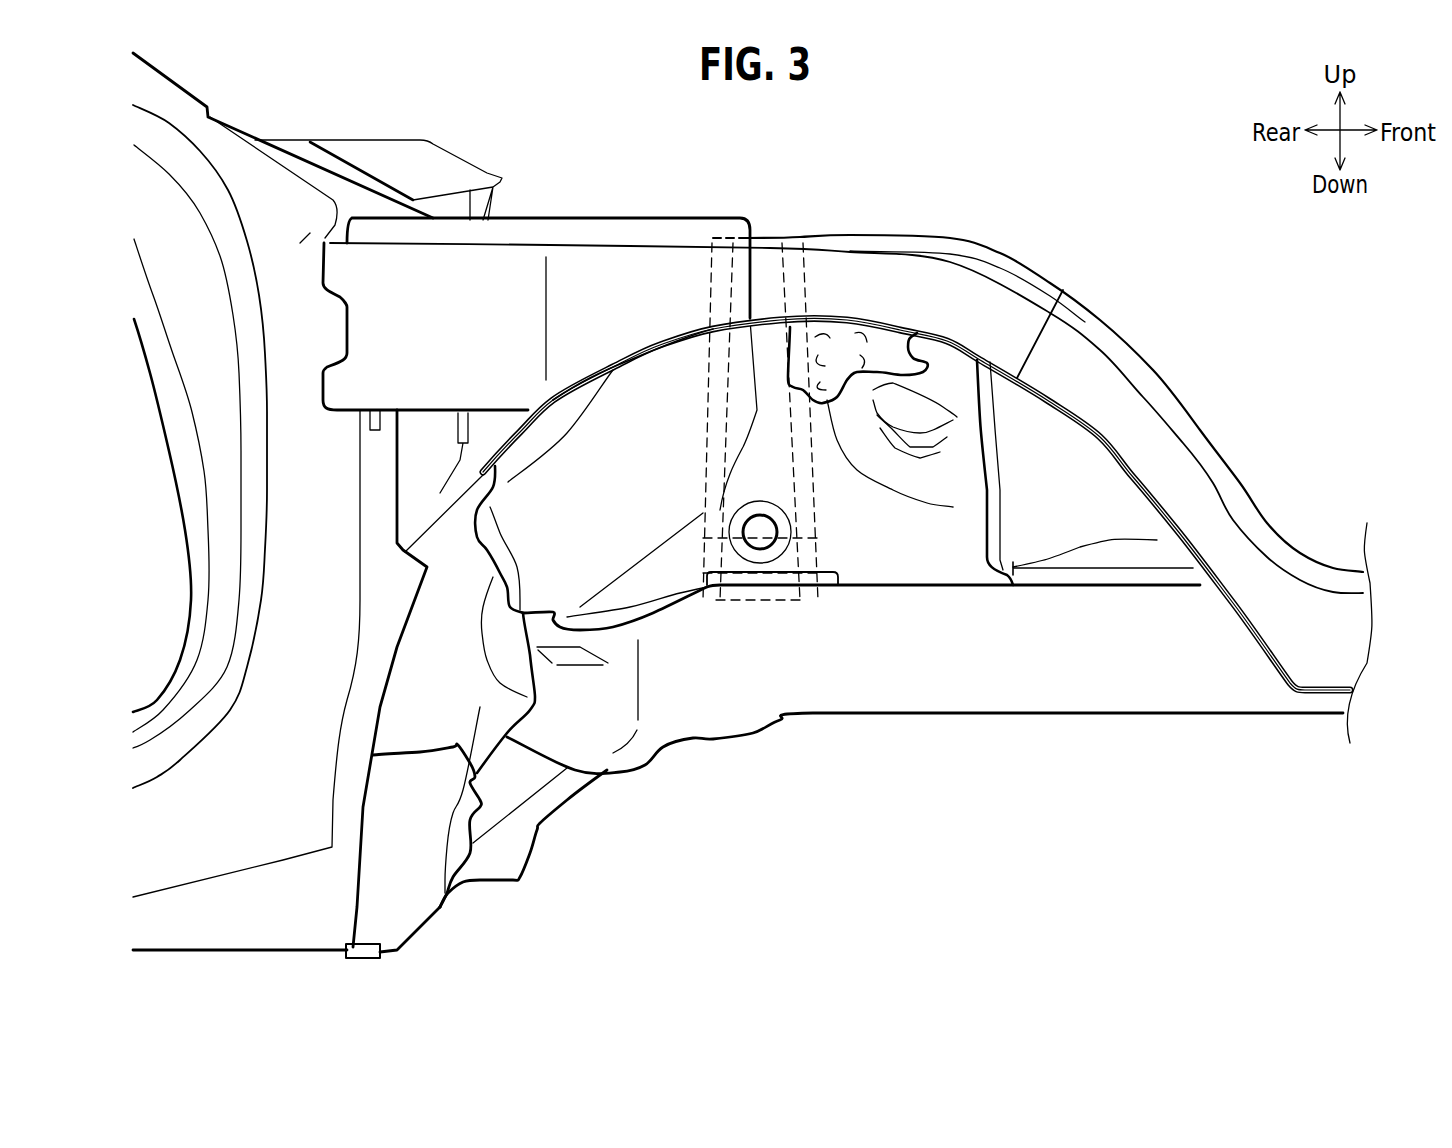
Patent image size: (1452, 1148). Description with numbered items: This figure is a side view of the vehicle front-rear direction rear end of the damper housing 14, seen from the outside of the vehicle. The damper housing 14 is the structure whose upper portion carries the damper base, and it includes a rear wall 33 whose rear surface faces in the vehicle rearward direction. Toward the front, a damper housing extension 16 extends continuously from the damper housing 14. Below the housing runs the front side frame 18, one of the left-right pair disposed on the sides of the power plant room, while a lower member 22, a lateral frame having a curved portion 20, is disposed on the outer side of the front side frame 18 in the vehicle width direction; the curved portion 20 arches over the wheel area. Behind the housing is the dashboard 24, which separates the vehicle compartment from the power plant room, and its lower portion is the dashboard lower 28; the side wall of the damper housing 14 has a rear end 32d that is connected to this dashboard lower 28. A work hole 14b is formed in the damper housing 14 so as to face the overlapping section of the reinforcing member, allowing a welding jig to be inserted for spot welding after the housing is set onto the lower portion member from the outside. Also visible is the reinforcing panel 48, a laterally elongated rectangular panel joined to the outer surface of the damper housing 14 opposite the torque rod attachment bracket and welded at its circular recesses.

The damper housing 14 is at (907, 590).
The work hole 14b is at (770, 530).
The damper housing extension 16 is at (1087, 590).
The front side frame 18 is at (1107, 717).
The curved portion 20 is at (997, 254).
The lower member 22 is at (1126, 322).
The dashboard 24 is at (418, 685).
The dashboard lower 28 is at (480, 707).
The rear end of side wall 32d is at (533, 697).
The rear wall 33 is at (680, 413).
The reinforcing panel 48 is at (883, 343).